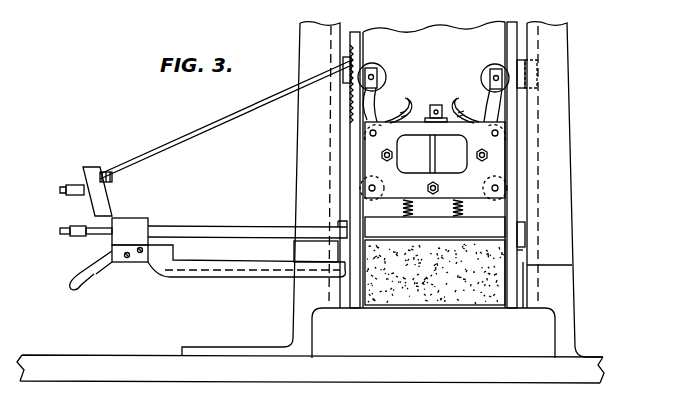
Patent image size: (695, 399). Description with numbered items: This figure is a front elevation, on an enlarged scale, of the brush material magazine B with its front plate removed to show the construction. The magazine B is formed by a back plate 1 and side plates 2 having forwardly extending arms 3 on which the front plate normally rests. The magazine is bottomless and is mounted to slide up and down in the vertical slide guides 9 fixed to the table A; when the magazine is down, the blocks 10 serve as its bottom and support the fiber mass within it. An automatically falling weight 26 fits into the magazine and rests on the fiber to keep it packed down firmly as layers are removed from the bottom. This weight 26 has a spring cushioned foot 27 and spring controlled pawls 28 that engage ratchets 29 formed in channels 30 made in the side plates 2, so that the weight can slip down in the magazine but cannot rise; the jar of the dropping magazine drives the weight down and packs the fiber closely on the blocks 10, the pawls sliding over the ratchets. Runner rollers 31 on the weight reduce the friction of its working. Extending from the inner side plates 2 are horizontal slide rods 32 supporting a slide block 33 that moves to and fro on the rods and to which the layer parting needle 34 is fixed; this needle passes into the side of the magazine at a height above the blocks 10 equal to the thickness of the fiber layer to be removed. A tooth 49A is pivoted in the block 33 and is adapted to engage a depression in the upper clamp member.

The back plate 1 is at (434, 164).
The side plates 2 is at (520, 291).
The forwardly extending arms 3 is at (527, 229).
The vertical slide guides 9 is at (392, 189).
The blocks 10 is at (433, 333).
The automatically falling weight 26 is at (433, 161).
The spring cushioned foot 27 is at (435, 218).
The spring controlled pawls 28 is at (478, 113).
The ratchets 29 is at (358, 70).
The channels 30 is at (512, 168).
The runner rollers 31 is at (493, 72).
The horizontal slide rods 32 is at (203, 229).
The slide block 33 is at (104, 214).
The layer parting needle 34 is at (260, 268).
The tooth 49A is at (94, 268).
The table A is at (310, 370).
The magazine B is at (435, 272).